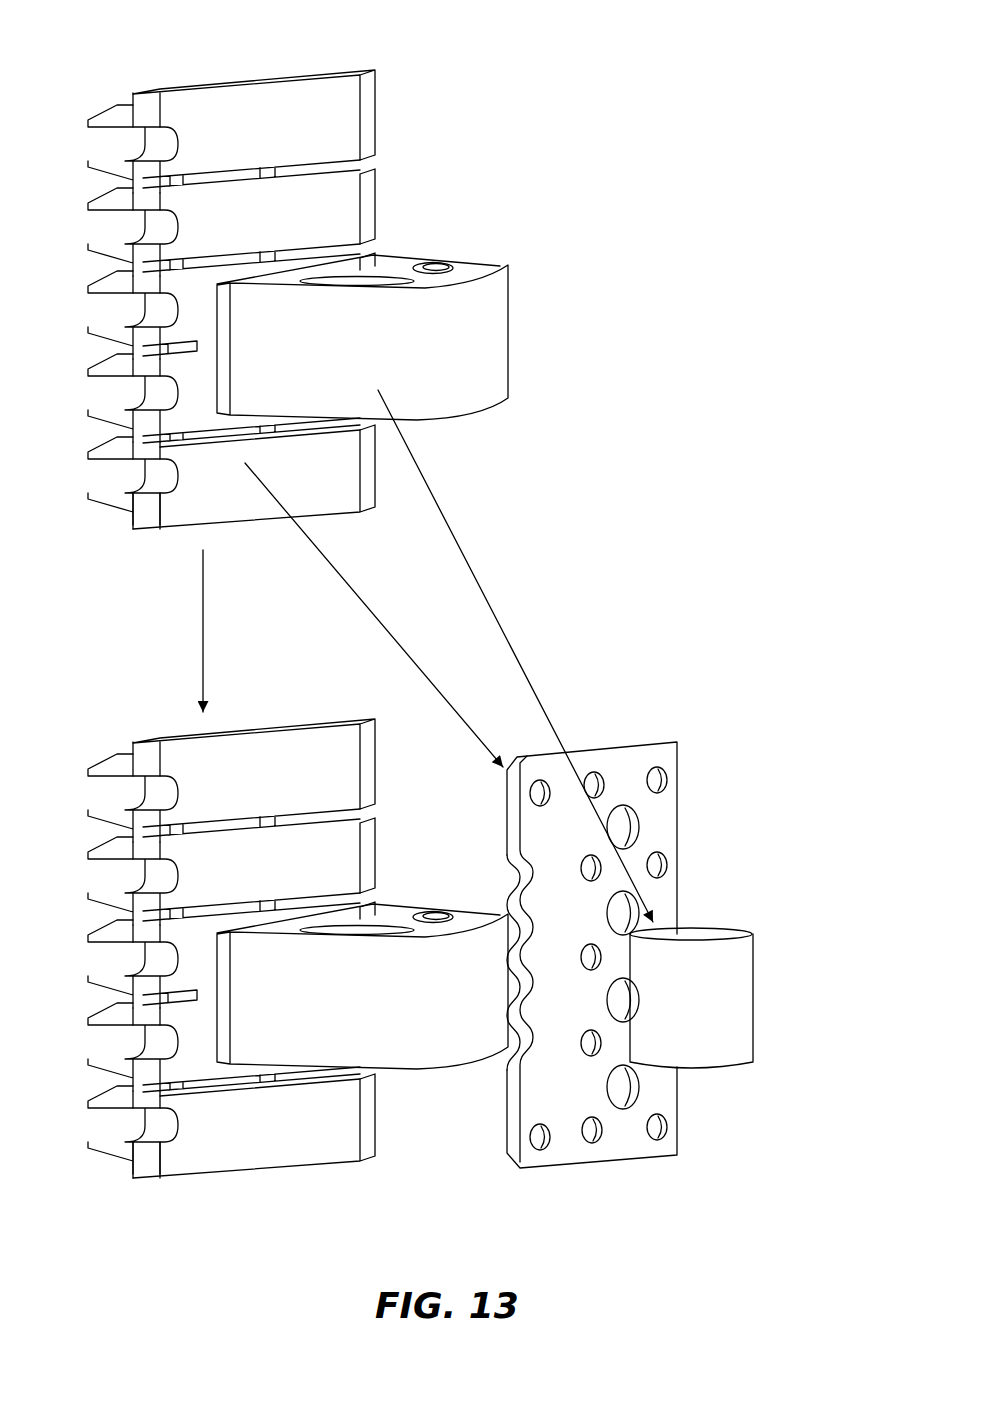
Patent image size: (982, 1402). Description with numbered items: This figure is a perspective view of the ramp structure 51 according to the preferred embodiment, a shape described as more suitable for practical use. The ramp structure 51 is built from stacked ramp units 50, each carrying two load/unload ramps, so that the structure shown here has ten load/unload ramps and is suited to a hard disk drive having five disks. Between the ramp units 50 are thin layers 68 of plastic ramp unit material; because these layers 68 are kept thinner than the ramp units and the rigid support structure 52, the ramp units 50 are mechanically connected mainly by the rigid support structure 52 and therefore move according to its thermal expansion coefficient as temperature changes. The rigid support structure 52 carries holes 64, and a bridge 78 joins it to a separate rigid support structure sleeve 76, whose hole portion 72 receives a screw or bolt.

The ramp unit 50 is at (264, 706).
The ramp structure 51 is at (420, 264).
The rigid support structure 52 is at (637, 930).
The holes 64 is at (665, 1133).
The thin layers 68 is at (338, 173).
The hole portion 72 is at (697, 937).
The rigid support structure sleeve 76 is at (748, 972).
The bridge 78 is at (380, 273).